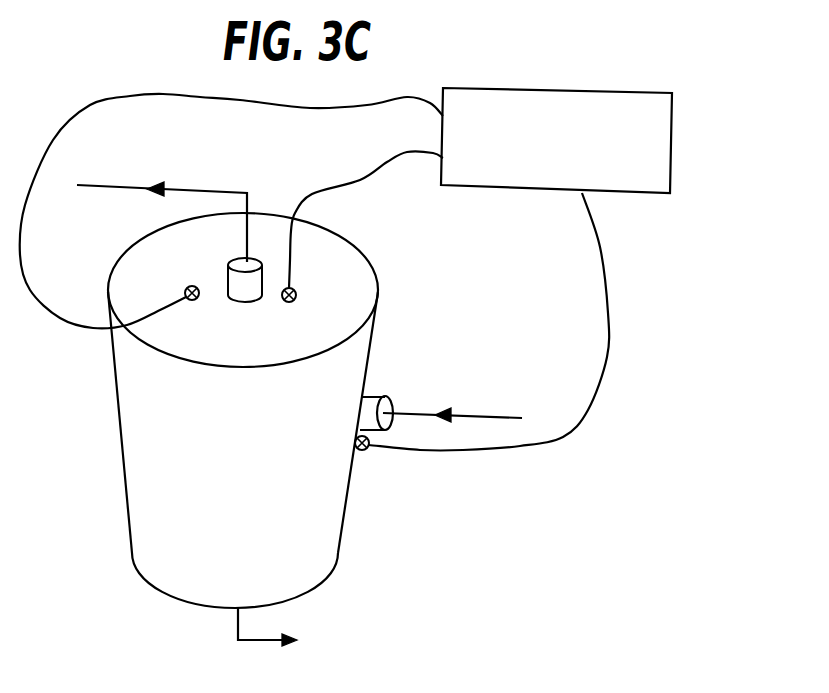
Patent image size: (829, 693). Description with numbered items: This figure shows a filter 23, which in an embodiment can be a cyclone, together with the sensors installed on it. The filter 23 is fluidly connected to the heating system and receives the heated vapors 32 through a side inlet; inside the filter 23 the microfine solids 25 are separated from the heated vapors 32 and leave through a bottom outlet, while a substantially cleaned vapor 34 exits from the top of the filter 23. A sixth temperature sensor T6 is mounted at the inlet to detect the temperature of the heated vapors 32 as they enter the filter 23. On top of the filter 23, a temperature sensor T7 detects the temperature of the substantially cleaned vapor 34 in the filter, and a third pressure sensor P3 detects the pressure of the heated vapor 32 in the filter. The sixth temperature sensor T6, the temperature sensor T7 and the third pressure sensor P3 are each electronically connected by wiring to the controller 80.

The filter 23 is at (125, 478).
The microfine solids 25 is at (267, 640).
The heated vapors 32 is at (478, 413).
The substantially cleaned vapor 34 is at (185, 190).
The controller 80 is at (507, 187).
The third pressure sensor P3 is at (188, 287).
The temperature sensor T7 is at (296, 292).
The sixth temperature sensor T6 is at (368, 448).